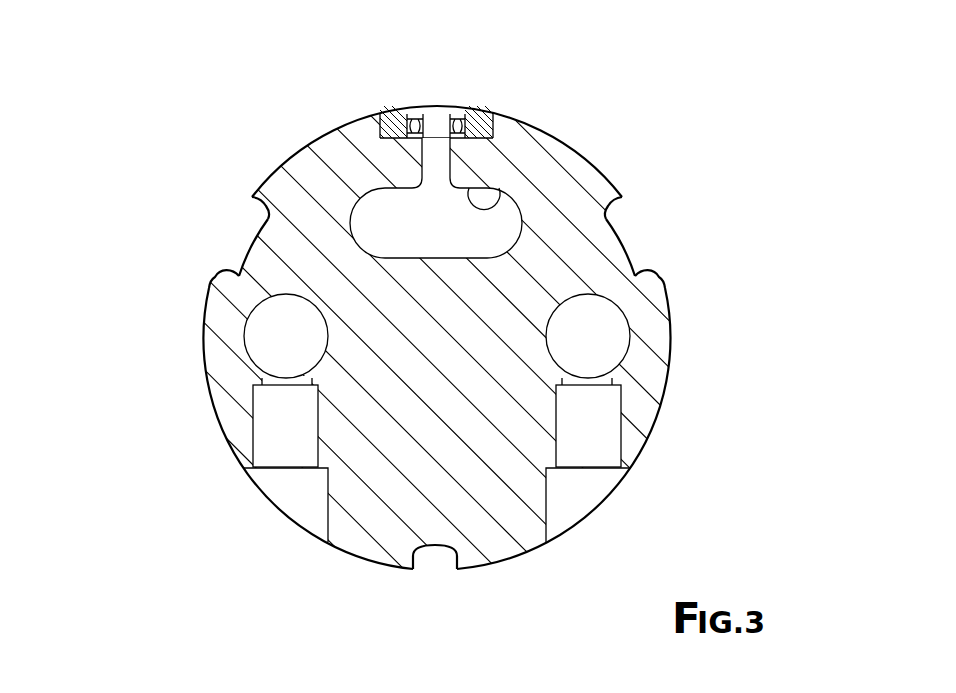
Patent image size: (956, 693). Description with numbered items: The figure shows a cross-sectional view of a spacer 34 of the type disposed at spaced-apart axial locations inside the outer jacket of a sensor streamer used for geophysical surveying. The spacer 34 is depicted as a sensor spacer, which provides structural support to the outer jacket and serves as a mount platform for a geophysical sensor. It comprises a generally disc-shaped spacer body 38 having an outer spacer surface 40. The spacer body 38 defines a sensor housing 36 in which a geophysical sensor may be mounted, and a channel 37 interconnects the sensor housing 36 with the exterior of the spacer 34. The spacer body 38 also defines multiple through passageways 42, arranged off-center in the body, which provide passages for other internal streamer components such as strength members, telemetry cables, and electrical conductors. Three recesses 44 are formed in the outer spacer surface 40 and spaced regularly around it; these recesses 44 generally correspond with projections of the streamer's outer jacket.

The spacer 34 is at (660, 134).
The sensor housing 36 is at (468, 192).
The channel 37 is at (437, 133).
The spacer body 38 is at (331, 148).
The outer spacer surface 40 is at (211, 397).
The through passageway 42 is at (272, 335).
The recess 44 is at (263, 223).